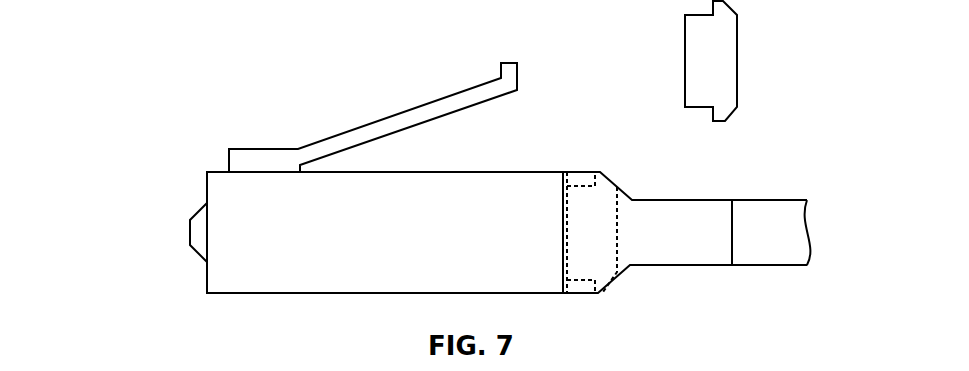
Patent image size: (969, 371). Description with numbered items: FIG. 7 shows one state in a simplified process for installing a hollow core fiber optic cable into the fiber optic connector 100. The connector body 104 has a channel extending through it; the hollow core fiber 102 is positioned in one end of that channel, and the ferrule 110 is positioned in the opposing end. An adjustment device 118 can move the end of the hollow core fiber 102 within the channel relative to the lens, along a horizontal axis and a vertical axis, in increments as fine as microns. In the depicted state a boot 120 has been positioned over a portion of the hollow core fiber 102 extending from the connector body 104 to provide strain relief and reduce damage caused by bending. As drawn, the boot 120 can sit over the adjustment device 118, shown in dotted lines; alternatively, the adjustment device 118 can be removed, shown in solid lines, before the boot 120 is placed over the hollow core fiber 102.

The fiber optic connector 100 is at (135, 68).
The hollow core fiber optic cable 102 is at (770, 222).
The connector body 104 is at (543, 172).
The ferrule 110 is at (200, 212).
The adjustment device 118 is at (608, 192).
The boot 120 is at (680, 240).